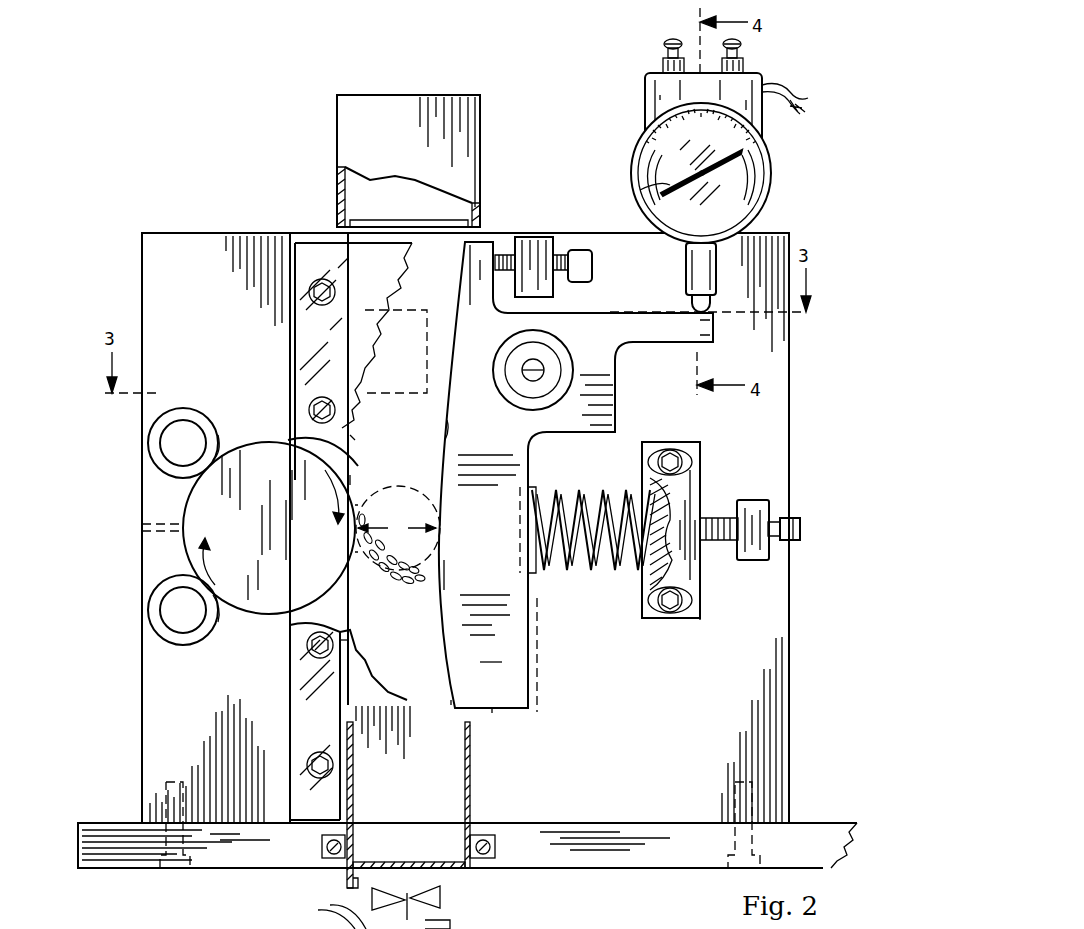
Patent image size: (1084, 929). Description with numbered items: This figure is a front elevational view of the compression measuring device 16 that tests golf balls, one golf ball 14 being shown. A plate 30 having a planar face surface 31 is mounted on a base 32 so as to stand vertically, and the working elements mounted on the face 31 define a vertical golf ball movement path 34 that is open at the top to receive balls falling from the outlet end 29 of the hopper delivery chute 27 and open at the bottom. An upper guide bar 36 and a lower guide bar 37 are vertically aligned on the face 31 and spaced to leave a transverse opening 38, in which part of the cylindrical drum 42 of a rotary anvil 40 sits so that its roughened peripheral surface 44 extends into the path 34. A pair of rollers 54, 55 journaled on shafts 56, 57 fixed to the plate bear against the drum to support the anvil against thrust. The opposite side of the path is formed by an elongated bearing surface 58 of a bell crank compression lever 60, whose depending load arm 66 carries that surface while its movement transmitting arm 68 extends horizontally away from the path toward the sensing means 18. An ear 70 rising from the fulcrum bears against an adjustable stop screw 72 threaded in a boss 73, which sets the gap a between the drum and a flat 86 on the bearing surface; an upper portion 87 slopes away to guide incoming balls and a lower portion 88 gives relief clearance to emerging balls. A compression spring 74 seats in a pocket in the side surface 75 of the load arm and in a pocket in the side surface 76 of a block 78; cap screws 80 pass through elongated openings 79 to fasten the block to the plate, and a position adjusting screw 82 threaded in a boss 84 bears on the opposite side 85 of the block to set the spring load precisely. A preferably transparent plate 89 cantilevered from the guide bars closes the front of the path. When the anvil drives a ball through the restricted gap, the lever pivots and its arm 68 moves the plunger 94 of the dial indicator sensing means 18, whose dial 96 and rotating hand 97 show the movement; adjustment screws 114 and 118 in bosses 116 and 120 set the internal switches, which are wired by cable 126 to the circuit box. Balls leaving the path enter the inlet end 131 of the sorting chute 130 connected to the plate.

The golf ball 14 is at (392, 488).
The compression measuring device 16 is at (125, 771).
The sensing means 18 is at (710, 166).
The delivery chute 27 is at (337, 130).
The outlet end 29 is at (337, 205).
The plate 30 is at (185, 232).
The planar face surface 31 is at (152, 716).
The base 32 is at (135, 869).
The golf ball movement path 34 is at (428, 245).
The upper guide bar 36 is at (294, 321).
The lower guide bar 37 is at (290, 697).
The transverse opening 38 is at (290, 438).
The rotary anvil 40 is at (172, 545).
The cylindrical drum 42 is at (265, 612).
The peripheral surface 44 is at (350, 500).
The roller 54 is at (150, 430).
The roller 55 is at (150, 588).
The shaft 56 is at (165, 450).
The shaft 57 is at (165, 612).
The elongated bearing surface 58 is at (448, 435).
The compression lever 60 is at (493, 712).
The load arm 66 is at (576, 477).
The movement transmitting arm 68 is at (650, 342).
The ear 70 is at (475, 260).
The adjustable stop screw 72 is at (593, 270).
The boss 73 is at (528, 240).
The compression spring 74 is at (607, 572).
The side surface 75 is at (530, 634).
The side surface 76 is at (655, 600).
The block 78 is at (700, 572).
The elongated openings 79 is at (692, 462).
The cap screws 80 is at (672, 450).
The position adjusting screw 82 is at (798, 524).
The boss 84 is at (770, 550).
The opposite side 85 is at (702, 500).
The flat 86 is at (432, 560).
The upper portion 87 is at (427, 341).
The lower portion 88 is at (446, 646).
The plate 89 is at (305, 375).
The plunger 94 is at (710, 305).
The dial 96 is at (762, 185).
The rotating hand 97 is at (633, 188).
The adjustment screw 114 is at (742, 43).
The boss 116 is at (743, 63).
The adjustment screw 118 is at (664, 43).
The boss 120 is at (663, 63).
The wiring cable 126 is at (790, 92).
The chute 130 is at (478, 780).
The inlet end 131 is at (385, 860).